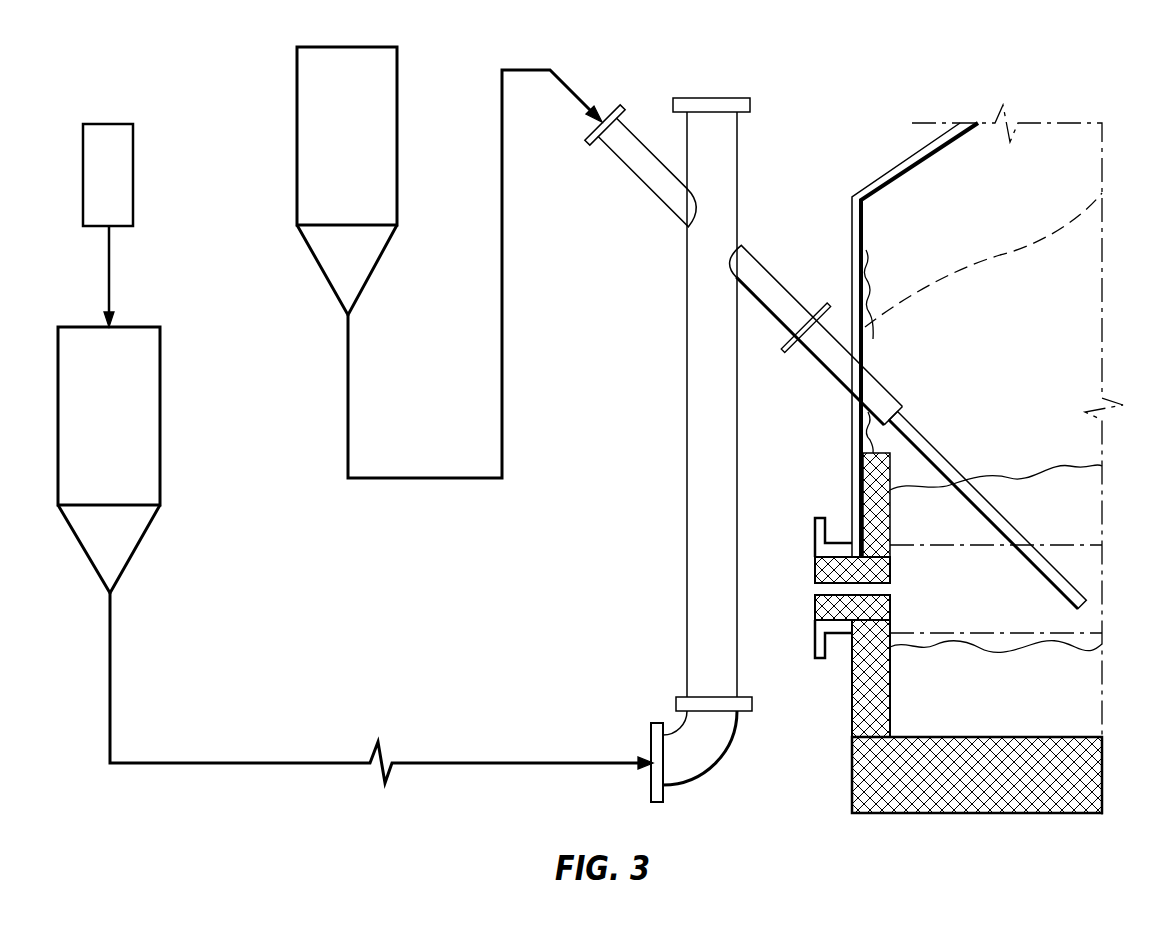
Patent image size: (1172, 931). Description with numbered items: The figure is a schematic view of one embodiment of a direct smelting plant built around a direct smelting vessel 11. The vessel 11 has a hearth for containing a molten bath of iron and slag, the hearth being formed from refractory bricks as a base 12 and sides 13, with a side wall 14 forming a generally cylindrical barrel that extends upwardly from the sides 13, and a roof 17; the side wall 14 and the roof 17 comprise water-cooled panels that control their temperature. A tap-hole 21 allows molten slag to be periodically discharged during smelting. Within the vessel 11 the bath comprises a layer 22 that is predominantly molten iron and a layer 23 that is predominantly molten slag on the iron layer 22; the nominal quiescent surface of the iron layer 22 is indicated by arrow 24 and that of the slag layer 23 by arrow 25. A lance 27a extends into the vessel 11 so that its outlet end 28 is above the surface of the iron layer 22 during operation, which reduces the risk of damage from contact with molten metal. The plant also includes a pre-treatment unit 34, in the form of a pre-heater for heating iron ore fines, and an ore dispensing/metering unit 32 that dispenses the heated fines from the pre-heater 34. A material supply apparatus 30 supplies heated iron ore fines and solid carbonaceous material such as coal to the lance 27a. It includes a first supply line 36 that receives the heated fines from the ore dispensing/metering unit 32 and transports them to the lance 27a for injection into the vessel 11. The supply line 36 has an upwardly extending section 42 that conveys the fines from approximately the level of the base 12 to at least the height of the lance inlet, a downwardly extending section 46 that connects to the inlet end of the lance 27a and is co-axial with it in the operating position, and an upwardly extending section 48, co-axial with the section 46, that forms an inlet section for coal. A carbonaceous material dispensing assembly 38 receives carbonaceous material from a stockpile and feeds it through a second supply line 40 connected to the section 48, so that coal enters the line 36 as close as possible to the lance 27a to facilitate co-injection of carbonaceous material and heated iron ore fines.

The vessel 11 is at (898, 161).
The base 12 is at (910, 783).
The sides 13 is at (870, 690).
The side wall 14 is at (858, 435).
The roof 17 is at (870, 187).
The tap-hole 21 is at (823, 589).
The iron layer 22 is at (950, 704).
The slag layer 23 is at (950, 604).
The arrow 24 is at (1092, 634).
The arrow 25 is at (1089, 546).
The lance 27a is at (840, 360).
The outlet end 28 is at (1100, 582).
The material supply apparatus 30 is at (154, 101).
The ore dispensing/metering unit 32 is at (150, 423).
The pre-treatment unit 34 is at (125, 182).
The first supply line 36 is at (255, 762).
The carbonaceous material dispensing assembly 38 is at (388, 143).
The second supply line 40 is at (521, 69).
The upwardly extending section 42 is at (712, 520).
The downwardly extending section 46 is at (753, 270).
The upwardly extending section 48 is at (642, 168).